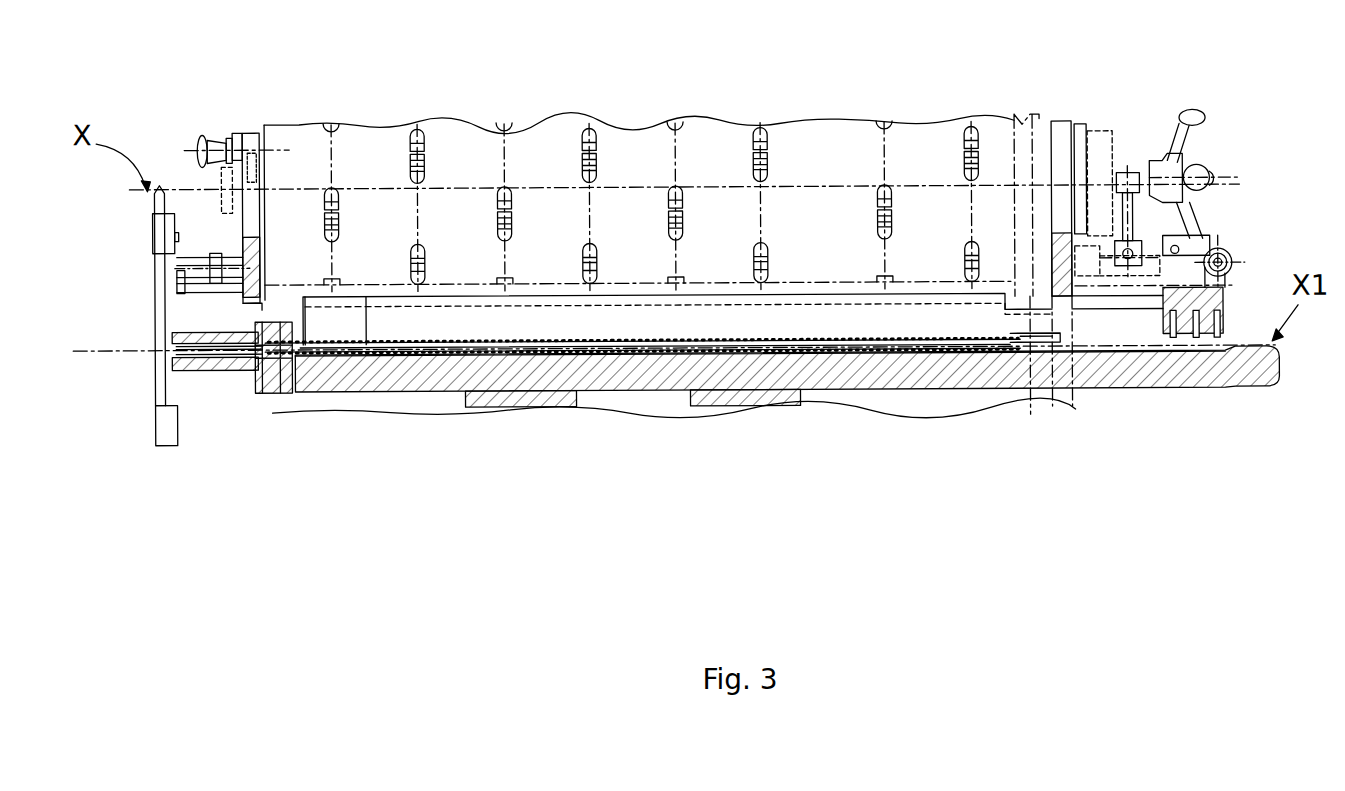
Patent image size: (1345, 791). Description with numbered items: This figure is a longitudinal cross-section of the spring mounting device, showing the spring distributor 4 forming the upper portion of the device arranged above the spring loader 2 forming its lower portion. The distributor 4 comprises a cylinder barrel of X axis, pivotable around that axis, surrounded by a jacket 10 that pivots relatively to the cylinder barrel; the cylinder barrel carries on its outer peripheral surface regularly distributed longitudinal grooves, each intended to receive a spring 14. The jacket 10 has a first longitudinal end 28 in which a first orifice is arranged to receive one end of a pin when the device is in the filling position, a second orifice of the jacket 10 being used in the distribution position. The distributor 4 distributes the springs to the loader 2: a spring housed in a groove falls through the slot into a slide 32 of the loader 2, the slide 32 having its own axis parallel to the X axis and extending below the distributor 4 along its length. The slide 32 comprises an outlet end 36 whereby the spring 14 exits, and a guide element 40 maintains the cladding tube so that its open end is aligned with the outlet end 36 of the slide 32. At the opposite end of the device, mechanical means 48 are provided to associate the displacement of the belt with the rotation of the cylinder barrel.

The spring loader 2 is at (353, 405).
The spring distributor 4 is at (476, 118).
The jacket 10 is at (551, 158).
The spring 14 is at (440, 354).
The first longitudinal end of the jacket 28 is at (218, 132).
The slide 32 is at (931, 350).
The outlet end 36 is at (288, 302).
The guide element 40 is at (207, 370).
The mechanical means 48 is at (1246, 221).